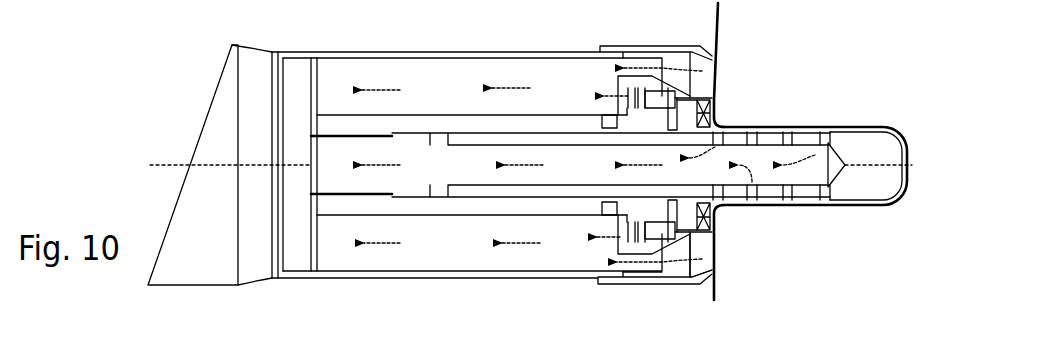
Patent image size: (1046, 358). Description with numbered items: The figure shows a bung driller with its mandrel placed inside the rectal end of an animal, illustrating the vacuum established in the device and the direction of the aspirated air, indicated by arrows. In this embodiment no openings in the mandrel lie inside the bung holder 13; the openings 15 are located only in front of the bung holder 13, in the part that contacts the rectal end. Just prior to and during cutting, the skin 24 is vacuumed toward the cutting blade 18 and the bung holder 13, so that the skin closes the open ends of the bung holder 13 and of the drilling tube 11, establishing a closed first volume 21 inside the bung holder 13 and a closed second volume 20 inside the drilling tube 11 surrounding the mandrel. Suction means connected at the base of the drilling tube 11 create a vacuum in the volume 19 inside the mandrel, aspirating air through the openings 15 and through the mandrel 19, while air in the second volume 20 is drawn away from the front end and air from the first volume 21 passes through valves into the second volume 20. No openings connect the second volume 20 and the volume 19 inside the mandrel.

The drilling tube 11 is at (447, 47).
The bung holder 13 is at (643, 247).
The openings 15 is at (785, 130).
The cutting blade 18 is at (698, 263).
The volume inside the mandrel 19 is at (563, 167).
The second volume 20 is at (372, 73).
The first volume 21 is at (706, 118).
The skin 24 is at (713, 28).